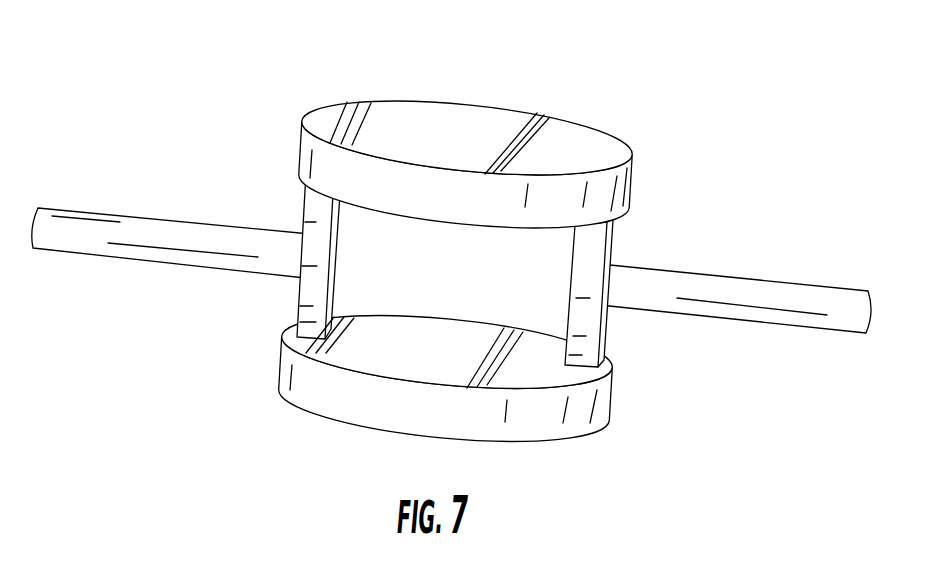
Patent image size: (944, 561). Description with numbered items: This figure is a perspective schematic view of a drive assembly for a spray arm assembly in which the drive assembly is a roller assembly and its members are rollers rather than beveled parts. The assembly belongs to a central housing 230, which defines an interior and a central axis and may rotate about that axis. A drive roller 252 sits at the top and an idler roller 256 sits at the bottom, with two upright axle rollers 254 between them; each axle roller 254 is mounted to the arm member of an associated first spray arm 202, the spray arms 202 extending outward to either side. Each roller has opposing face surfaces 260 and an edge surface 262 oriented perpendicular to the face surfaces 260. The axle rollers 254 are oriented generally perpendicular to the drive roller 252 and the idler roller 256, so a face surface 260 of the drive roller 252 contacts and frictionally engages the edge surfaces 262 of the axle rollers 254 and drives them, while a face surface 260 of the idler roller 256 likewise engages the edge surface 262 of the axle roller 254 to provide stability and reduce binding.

The first spray arm 202 is at (161, 194).
The central housing 230 is at (451, 277).
The drive roller 252 is at (359, 435).
The axle roller 254 is at (282, 298).
The idler roller 256 is at (437, 124).
The face surface 260 is at (303, 220).
The edge surface 262 is at (293, 320).